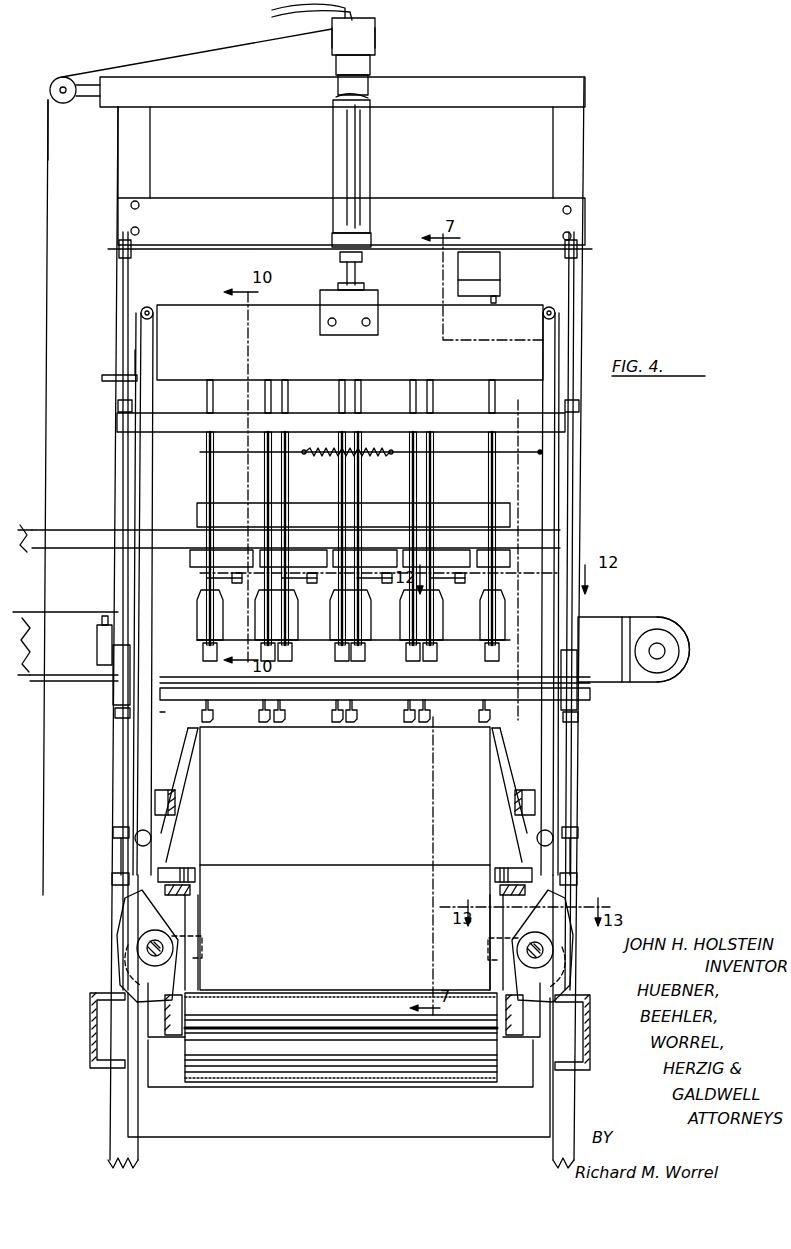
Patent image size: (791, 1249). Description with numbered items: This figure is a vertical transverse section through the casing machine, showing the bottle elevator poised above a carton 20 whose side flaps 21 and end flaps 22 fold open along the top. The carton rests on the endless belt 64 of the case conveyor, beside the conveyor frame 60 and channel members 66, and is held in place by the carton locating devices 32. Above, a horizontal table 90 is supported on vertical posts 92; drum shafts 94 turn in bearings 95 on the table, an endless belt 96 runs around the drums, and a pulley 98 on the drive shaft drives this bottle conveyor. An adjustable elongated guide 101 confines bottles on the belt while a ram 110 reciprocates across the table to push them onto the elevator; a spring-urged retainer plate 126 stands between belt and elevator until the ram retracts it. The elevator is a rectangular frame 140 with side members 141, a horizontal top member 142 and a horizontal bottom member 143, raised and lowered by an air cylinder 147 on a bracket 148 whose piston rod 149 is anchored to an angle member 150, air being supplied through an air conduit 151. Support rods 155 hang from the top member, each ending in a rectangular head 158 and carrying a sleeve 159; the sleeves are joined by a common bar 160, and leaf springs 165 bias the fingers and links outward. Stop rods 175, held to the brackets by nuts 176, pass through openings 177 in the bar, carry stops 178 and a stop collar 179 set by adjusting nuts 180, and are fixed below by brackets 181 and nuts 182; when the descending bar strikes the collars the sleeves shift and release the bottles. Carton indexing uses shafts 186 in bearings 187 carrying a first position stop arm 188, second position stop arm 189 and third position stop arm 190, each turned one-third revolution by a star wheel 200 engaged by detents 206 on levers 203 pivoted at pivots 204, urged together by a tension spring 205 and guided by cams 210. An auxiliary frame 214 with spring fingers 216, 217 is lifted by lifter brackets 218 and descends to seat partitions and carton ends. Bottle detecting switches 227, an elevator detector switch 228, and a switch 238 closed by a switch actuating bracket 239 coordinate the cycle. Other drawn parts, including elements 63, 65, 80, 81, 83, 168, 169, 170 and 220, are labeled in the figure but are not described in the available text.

The carton 20 is at (372, 933).
The side flaps 21 is at (360, 848).
The end flaps 22 is at (185, 822).
The carton locating devices 32 is at (118, 934).
The conveyor frame 60 is at (90, 1005).
The roller core 63 is at (375, 1060).
The endless belt 64 is at (345, 1000).
The roller surface 65 is at (300, 1008).
The channel members 66 is at (175, 1036).
The support block 80 is at (180, 870).
The pad 81 is at (191, 890).
The guide block 83 is at (176, 800).
The table 90 is at (600, 617).
The vertical posts 92 is at (133, 165).
The shafts 94 is at (665, 656).
The bearings 95 is at (664, 629).
The endless belt 96 is at (630, 617).
The pulley 98 is at (688, 640).
The elongated guide 101 is at (180, 540).
The ram 110 is at (227, 503).
The retainer plate 126 is at (230, 602).
The rectangular frame 140 is at (214, 298).
The side members 141 is at (136, 508).
The horizontal top member 142 is at (393, 322).
The horizontal bottom member 143 is at (358, 1125).
The air cylinder 147 is at (352, 147).
The bracket 148 is at (432, 205).
The piston rod 149 is at (360, 268).
The angle member 150 is at (330, 296).
The air conduit 151 is at (272, 13).
The support rods 155 is at (430, 397).
The rectangular head 158 is at (423, 655).
The sleeves 159 is at (440, 497).
The bar 160 is at (452, 440).
The leaf springs 165 is at (425, 625).
The side frame 168 is at (50, 160).
The pulley 169 is at (62, 84).
The top beam 170 is at (462, 82).
The stop rods 175 is at (122, 277).
The nuts 176 is at (112, 252).
The openings 177 is at (117, 422).
The stops 178 is at (117, 407).
The stop collar 179 is at (118, 672).
The adjusting nuts 180 is at (115, 712).
The brackets 181 is at (113, 848).
The nuts 182 is at (112, 836).
The shafts 186 is at (147, 948).
The bearings 187 is at (175, 985).
The first position stop arm 188 is at (195, 940).
The second position stop arm 189 is at (128, 898).
The third position stop arm 190 is at (125, 986).
The star wheel 200 is at (125, 960).
The levers 203 is at (145, 487).
The pivot 204 is at (140, 312).
The tension spring 205 is at (322, 458).
The detent 206 is at (138, 832).
The cam 210 is at (112, 878).
The auxiliary frame 214 is at (290, 684).
The spring fingers 216 is at (425, 724).
The spring fingers 217 is at (210, 720).
The lifter brackets 218 is at (162, 713).
The cylinder head 220 is at (356, 30).
The bottle detecting switches 227 is at (450, 557).
The elevator detector switch 228 is at (492, 285).
The switch 238 is at (98, 640).
The switch actuating bracket 239 is at (104, 376).